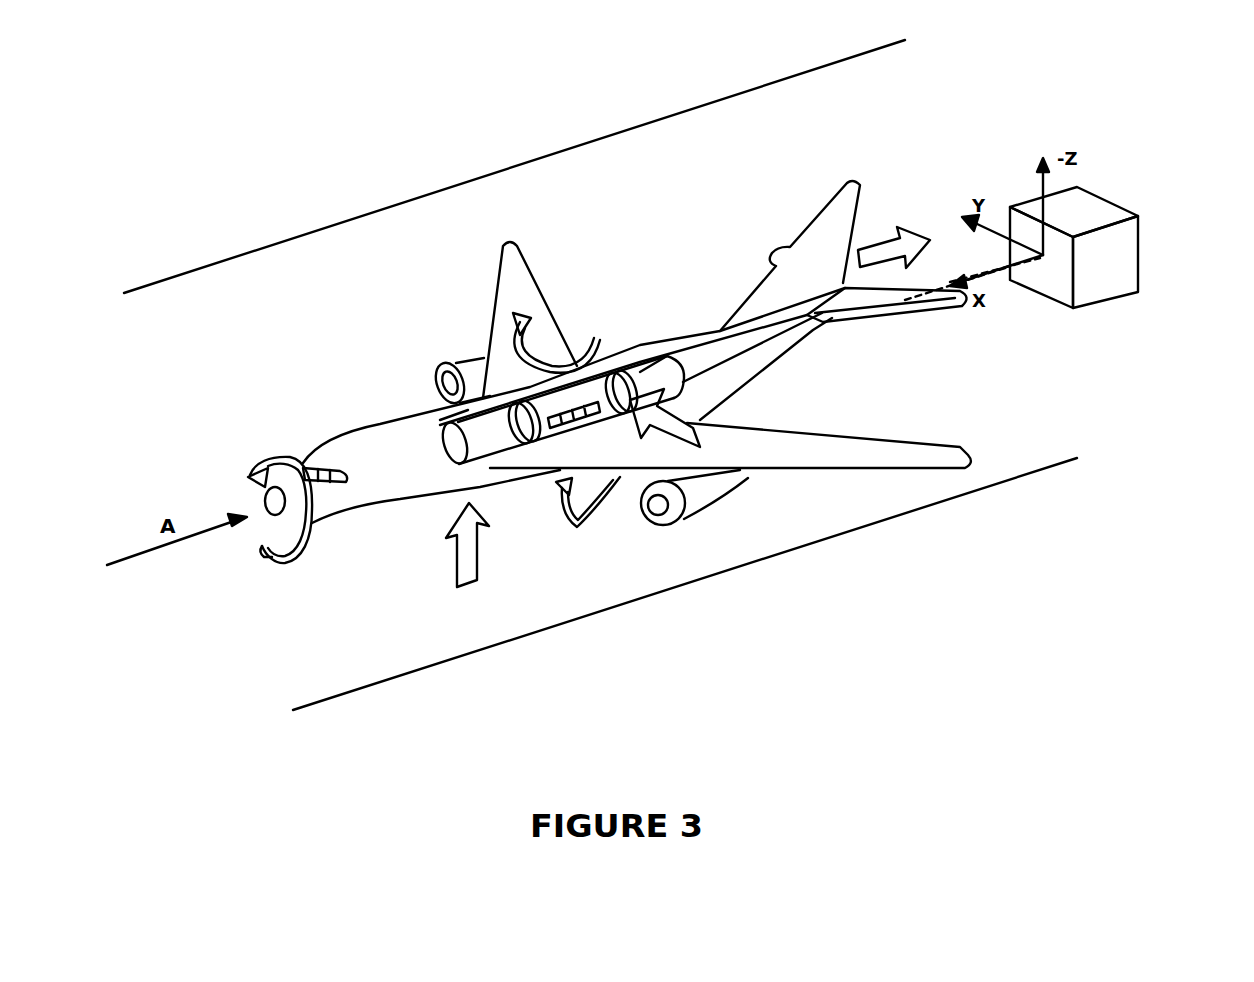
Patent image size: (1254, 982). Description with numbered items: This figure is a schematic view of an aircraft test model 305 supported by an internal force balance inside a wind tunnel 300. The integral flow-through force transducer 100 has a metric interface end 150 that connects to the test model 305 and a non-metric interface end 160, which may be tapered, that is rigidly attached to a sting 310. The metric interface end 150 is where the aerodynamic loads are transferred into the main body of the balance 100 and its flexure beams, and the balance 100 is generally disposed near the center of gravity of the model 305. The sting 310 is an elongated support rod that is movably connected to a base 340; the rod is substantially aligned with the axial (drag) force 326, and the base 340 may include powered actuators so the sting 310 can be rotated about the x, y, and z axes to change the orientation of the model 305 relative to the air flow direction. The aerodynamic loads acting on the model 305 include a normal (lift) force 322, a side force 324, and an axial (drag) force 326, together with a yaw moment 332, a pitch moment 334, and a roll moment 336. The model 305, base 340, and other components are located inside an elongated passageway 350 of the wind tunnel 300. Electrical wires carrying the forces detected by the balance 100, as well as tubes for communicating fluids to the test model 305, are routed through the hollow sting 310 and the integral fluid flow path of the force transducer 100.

The wind tunnel 300 is at (370, 64).
The test model 305 is at (387, 418).
The integral flow-through force transducer 100 is at (637, 365).
The metric interface end 150 is at (440, 420).
The non-metric interface end 160 is at (670, 340).
The sting 310 is at (934, 283).
The normal (lift) force 322 is at (457, 578).
The side force 324 is at (777, 433).
The axial (drag) force 326 is at (883, 233).
The yaw moment 332 is at (597, 330).
The pitch moment 334 is at (583, 527).
The roll moment 336 is at (312, 547).
The base 340 is at (1140, 255).
The elongated passageway 350 is at (813, 543).